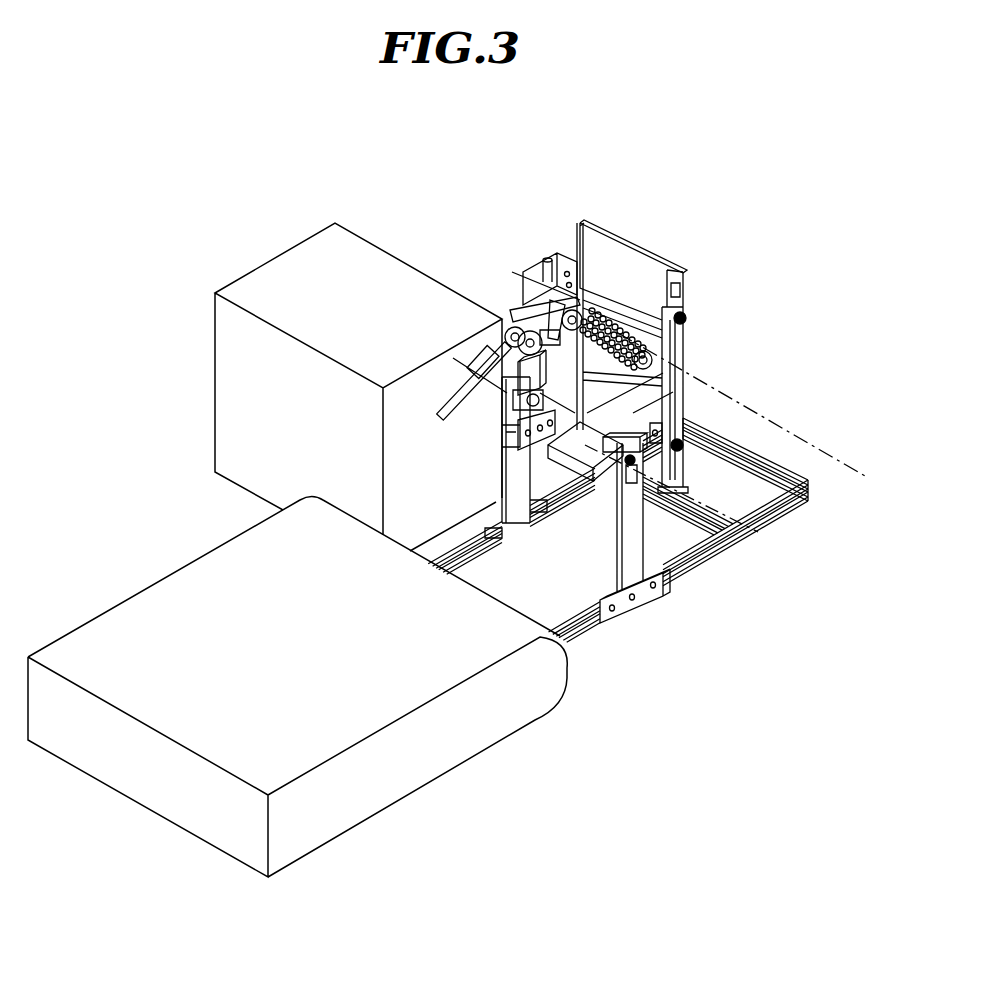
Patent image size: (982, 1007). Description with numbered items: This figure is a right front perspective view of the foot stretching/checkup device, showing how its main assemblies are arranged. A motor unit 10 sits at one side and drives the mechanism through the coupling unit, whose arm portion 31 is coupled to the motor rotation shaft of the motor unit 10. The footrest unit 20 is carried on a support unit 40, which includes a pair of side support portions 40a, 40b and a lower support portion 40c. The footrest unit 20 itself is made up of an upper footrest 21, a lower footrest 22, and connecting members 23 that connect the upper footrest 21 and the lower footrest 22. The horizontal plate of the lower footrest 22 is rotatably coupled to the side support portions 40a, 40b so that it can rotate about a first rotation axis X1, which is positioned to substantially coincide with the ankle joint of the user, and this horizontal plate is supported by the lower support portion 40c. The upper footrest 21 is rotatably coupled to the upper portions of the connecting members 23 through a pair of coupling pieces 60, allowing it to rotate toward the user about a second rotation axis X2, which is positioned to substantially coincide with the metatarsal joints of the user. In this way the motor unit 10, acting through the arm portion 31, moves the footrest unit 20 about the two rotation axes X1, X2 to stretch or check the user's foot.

The motor unit 10 is at (390, 268).
The footrest unit 20 is at (691, 358).
The upper footrest 21 is at (686, 296).
The lower footrest 22 is at (673, 392).
The connecting members 23 is at (637, 413).
The arm portion 31 is at (451, 403).
The support unit 40 is at (449, 509).
The side support portion 40a is at (635, 573).
The side support portion 40b is at (517, 473).
The lower support portion 40c is at (707, 537).
The coupling pieces 60 is at (662, 325).
The first rotation axis X1 is at (758, 532).
The second rotation axis X2 is at (757, 413).